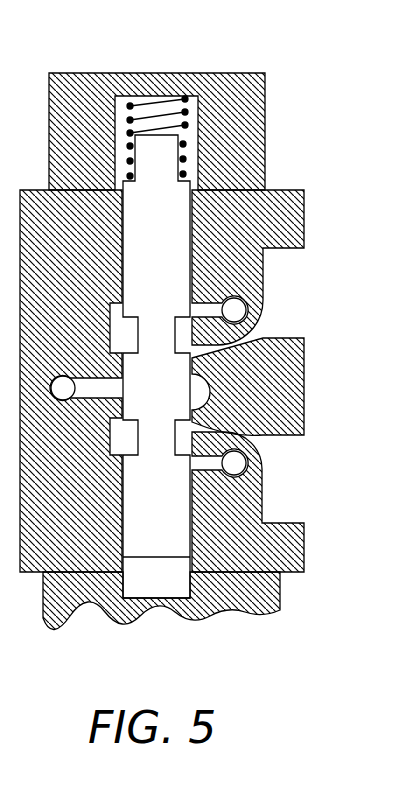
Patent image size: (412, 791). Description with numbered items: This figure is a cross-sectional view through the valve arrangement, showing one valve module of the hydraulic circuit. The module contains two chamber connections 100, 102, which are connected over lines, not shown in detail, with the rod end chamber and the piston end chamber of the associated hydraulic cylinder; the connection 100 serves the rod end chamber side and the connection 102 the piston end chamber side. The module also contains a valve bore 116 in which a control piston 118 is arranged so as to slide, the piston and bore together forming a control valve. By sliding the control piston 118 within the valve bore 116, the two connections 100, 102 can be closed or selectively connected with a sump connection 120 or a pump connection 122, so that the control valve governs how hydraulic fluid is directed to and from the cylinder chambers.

The chamber connection 100 is at (281, 318).
The chamber connection 102 is at (288, 496).
The valve bore 116 is at (233, 345).
The control piston 118 is at (170, 230).
The sump connection 120 is at (236, 306).
The pump connection 122 is at (64, 377).